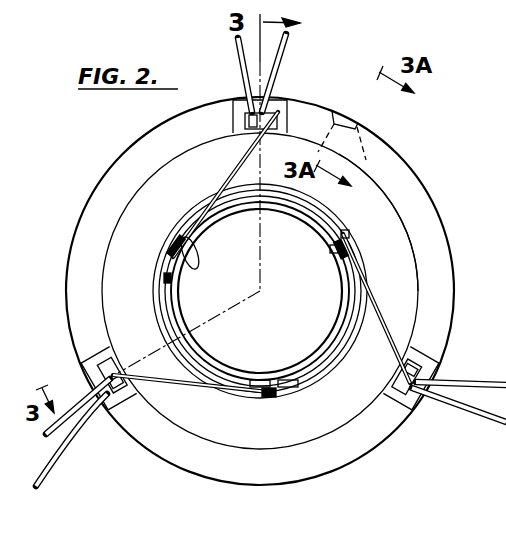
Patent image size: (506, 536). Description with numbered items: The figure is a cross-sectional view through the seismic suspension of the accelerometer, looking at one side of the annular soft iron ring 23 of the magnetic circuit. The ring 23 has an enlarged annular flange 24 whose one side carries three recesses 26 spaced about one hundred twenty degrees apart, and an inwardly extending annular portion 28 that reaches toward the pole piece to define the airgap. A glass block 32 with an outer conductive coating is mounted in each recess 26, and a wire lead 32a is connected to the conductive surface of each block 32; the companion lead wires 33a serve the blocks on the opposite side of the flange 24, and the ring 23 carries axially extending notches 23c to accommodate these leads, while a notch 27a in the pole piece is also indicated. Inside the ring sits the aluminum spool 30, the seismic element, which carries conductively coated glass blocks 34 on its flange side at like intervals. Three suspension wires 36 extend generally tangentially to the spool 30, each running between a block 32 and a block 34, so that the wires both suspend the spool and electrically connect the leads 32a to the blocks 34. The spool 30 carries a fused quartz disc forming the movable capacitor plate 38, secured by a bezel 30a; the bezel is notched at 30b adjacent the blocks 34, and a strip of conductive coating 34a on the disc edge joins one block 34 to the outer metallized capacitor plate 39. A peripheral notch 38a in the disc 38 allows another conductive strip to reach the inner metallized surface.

The annular soft iron ring 23 is at (248, 489).
The axially extending notches 23c is at (240, 99).
The enlarged annular flange 24 is at (198, 462).
The recesses 26 is at (278, 99).
The notch in pole piece 27a is at (372, 119).
The inwardly extending annular portion 28 is at (381, 197).
The spool 30 is at (350, 323).
The bezel 30a is at (307, 373).
The notch in bezel 30b is at (168, 278).
The glass block 32 is at (262, 99).
The wire leads 32a is at (240, 66).
The wires 33a is at (286, 48).
The glass blocks 34 is at (172, 239).
The strip of conductive coating 34a is at (330, 250).
The suspension wires 36 is at (228, 176).
The movable capacitor plate 38 is at (328, 345).
The notch in quartz plate 38a is at (183, 262).
The metallized capacitor plate 39 is at (300, 300).